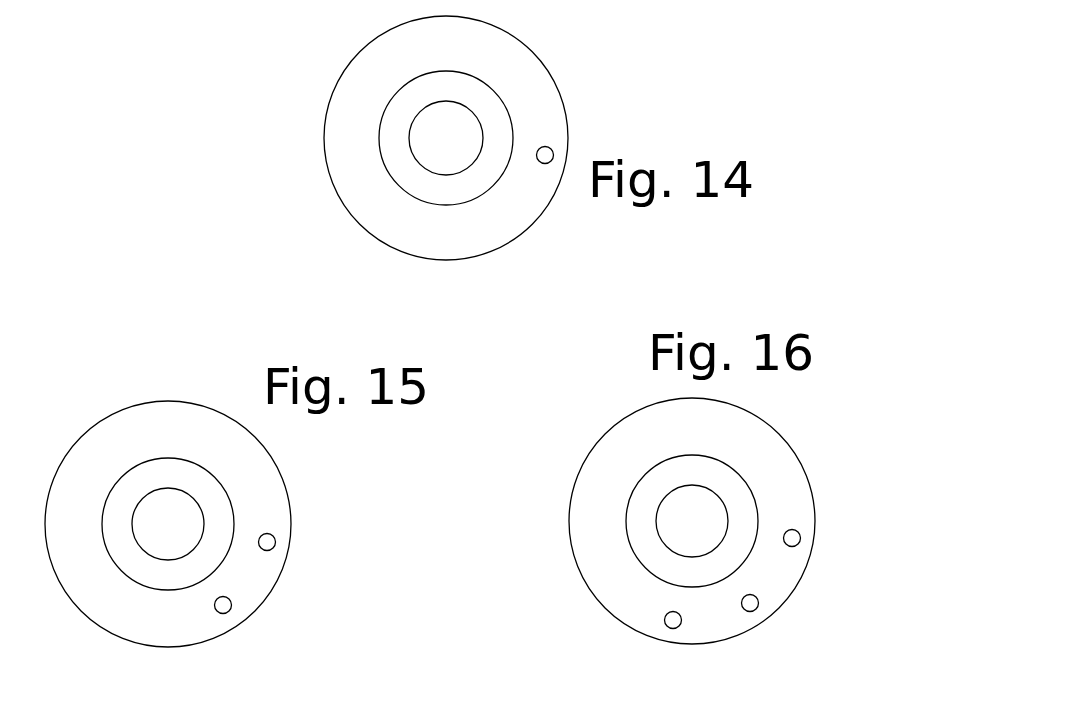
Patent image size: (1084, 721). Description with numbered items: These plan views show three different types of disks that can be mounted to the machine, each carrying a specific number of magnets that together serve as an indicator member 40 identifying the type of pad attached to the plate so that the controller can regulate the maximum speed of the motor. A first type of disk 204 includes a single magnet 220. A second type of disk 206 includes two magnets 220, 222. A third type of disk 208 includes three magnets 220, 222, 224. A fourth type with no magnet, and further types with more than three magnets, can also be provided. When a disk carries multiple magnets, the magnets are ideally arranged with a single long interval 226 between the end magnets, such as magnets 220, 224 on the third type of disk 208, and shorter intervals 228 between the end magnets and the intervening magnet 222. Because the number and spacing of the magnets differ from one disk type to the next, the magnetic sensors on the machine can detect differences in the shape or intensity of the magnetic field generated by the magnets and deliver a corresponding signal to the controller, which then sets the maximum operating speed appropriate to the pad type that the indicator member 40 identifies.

In FIG. 14, the indicator member 40 is at (643, 105).
In FIG. 15, the indicator member 40 is at (333, 561).
In FIG. 16, the indicator member 40 is at (813, 598).
In FIG. 14, the first type of disk 204 is at (325, 97).
In FIG. 15, the second type of disk 206 is at (150, 388).
In FIG. 16, the third type of disk 208 is at (578, 432).
In FIG. 14, the magnet 220 is at (551, 149).
In FIG. 15, the magnet 220 is at (273, 536).
In FIG. 16, the magnet 220 is at (801, 538).
In FIG. 15, the magnet 222 is at (296, 618).
In FIG. 16, the magnet 222 is at (759, 601).
In FIG. 16, the magnet 224 is at (682, 622).
In FIG. 16, the long interval 226 is at (652, 441).
In FIG. 16, the shorter interval 228 is at (768, 567).